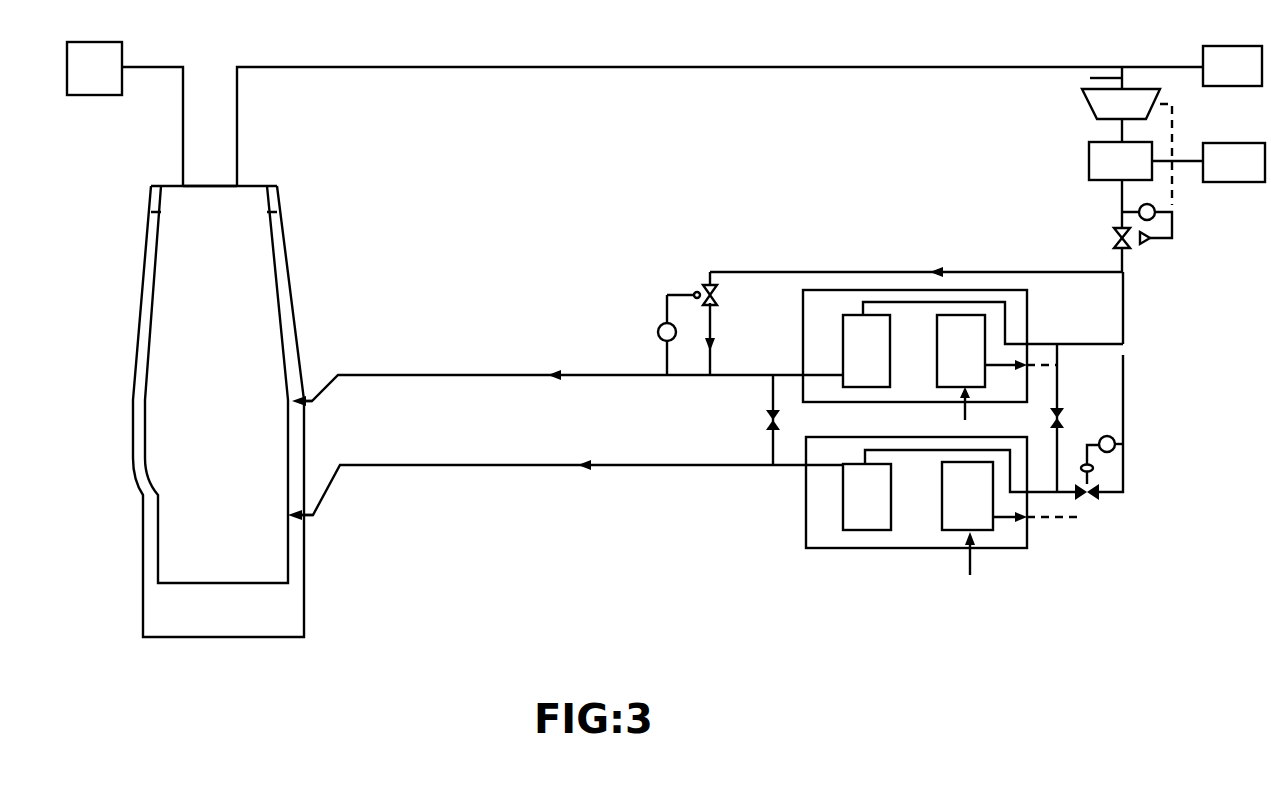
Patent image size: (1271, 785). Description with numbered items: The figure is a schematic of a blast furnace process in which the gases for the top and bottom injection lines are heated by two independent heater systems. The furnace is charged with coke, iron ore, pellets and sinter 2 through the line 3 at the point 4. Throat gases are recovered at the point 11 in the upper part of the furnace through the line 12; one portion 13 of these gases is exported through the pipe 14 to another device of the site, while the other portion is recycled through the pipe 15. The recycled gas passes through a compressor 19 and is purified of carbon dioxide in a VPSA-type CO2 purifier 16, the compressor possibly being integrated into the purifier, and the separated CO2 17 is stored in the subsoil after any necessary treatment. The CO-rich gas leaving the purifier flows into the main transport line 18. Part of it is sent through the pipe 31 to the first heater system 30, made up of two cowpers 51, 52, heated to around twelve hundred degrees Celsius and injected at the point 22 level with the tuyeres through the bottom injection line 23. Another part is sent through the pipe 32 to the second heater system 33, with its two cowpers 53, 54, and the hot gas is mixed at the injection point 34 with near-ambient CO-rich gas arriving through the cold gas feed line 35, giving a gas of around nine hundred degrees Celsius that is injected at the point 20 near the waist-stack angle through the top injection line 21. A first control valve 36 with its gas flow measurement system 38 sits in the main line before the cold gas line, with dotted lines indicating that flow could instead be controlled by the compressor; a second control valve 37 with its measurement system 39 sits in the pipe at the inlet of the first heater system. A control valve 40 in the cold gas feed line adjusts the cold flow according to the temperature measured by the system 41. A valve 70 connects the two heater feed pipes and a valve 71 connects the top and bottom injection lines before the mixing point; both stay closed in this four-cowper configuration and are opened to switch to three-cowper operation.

The sinter 2 is at (94, 68).
The line 3 is at (160, 67).
The point 4 is at (183, 186).
The point 11 is at (237, 186).
The line 12 is at (372, 67).
The portion of throat gases 13 is at (1232, 66).
The pipe 14 is at (1128, 67).
The pipe 15 is at (1090, 78).
The CO2 purifier 16 is at (1120, 161).
The CO2 17 is at (1208, 162).
The main transport line 18 is at (1122, 197).
The compressor 19 is at (1121, 115).
The point 20 is at (300, 401).
The top injection line 21 is at (444, 375).
The point 22 is at (298, 522).
The bottom injection line 23 is at (505, 465).
The first heater system 30 is at (920, 555).
The pipe 31 is at (1123, 465).
The pipe 32 is at (1068, 344).
The second heater system 33 is at (840, 285).
The injection point 34 is at (712, 375).
The cold gas feed line 35 is at (895, 272).
The first control valve 36 is at (1129, 247).
The second control valve 37 is at (1090, 500).
The gas flow measurement system 38 is at (1156, 212).
The gas flow measurement system 39 is at (1108, 436).
The control valve 40 is at (719, 297).
The temperature measurement system 41 is at (658, 330).
The cowper 51 is at (866, 351).
The cowper 52 is at (997, 367).
The cowper 53 is at (867, 497).
The cowper 54 is at (984, 518).
The valve 70 is at (1065, 420).
The valve 71 is at (766, 422).